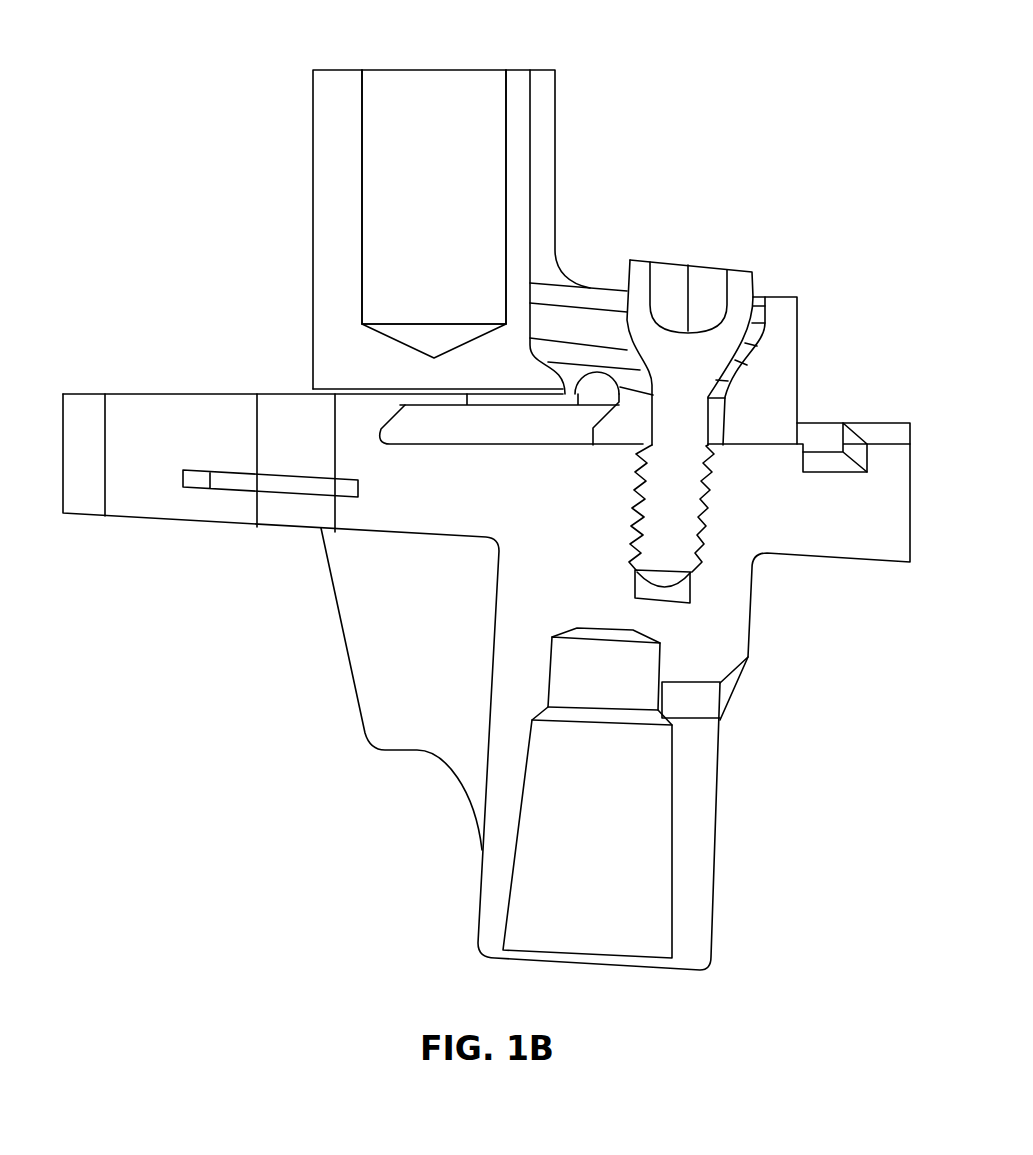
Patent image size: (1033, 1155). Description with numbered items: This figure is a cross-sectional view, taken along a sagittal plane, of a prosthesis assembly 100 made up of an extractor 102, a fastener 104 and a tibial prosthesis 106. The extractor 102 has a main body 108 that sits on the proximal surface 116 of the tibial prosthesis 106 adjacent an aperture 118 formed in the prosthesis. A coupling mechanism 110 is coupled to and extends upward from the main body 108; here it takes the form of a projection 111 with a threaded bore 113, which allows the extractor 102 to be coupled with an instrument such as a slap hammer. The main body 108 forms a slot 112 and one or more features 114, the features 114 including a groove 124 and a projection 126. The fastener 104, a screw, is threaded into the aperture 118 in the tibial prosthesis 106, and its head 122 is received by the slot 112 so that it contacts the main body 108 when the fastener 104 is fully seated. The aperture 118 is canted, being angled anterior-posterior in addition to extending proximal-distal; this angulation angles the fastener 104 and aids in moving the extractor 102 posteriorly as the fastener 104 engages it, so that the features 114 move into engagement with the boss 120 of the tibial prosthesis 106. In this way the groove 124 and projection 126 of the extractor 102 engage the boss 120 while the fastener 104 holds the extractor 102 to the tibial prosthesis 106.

The prosthesis assembly 100 is at (823, 63).
The extractor 102 is at (810, 288).
The fastener 104 is at (682, 357).
The tibial prosthesis 106 is at (124, 381).
The main body 108 is at (773, 385).
The coupling mechanism 110 is at (332, 198).
The projection 111 is at (434, 214).
The slot 112 is at (612, 323).
The threaded bore 113 is at (453, 115).
The one or more features 114 is at (580, 440).
The proximal surface 116 is at (798, 443).
The aperture 118 is at (714, 540).
The boss 120 is at (558, 398).
The head 122 is at (638, 290).
The groove 124 is at (612, 382).
The projection 126 is at (610, 428).